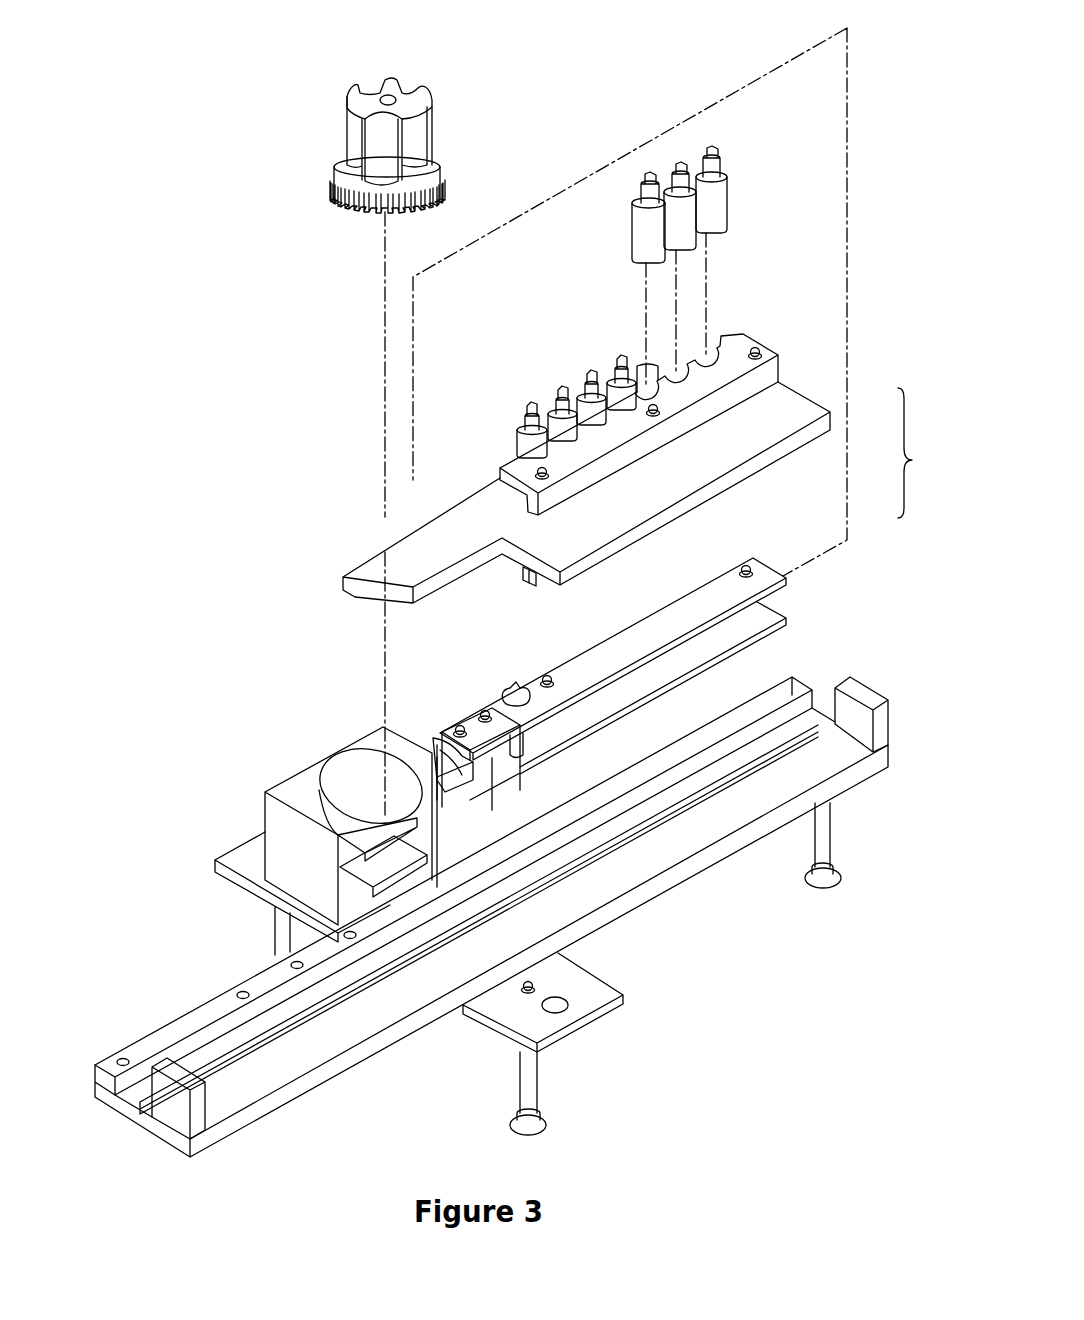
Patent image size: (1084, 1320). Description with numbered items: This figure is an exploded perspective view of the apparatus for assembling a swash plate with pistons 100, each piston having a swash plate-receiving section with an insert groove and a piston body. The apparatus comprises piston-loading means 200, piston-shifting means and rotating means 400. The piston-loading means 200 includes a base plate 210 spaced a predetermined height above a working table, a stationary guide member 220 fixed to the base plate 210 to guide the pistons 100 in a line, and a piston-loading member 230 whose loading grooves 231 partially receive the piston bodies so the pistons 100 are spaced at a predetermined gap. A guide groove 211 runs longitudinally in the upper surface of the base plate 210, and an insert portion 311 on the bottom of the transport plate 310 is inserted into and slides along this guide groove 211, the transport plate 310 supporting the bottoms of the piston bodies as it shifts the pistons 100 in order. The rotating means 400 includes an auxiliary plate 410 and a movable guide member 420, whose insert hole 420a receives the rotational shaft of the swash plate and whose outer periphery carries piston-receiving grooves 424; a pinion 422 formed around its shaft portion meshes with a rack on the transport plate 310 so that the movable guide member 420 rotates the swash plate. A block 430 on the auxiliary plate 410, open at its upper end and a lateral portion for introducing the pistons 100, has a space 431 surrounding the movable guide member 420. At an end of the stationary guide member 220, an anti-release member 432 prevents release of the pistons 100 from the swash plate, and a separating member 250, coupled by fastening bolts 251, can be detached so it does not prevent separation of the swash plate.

The piston 100 is at (788, 143).
The piston-loading means 200 is at (924, 453).
The base plate 210 is at (317, 1048).
The guide groove 211 is at (137, 1117).
The stationary guide member 220 is at (786, 575).
The piston-loading member 230 is at (765, 378).
The loading grooves 231 is at (718, 346).
The separating member 250 is at (473, 722).
The fastening bolts 251 is at (487, 712).
The transport plate 310 is at (744, 444).
The insert portion 311 is at (531, 578).
The rotating means 400 is at (180, 852).
The auxiliary plate 410 is at (247, 862).
The movable guide member 420 is at (353, 85).
The insert hole 420a is at (393, 88).
The pinion 422 is at (332, 187).
The piston-receiving grooves 424 is at (353, 117).
The block 430 is at (290, 790).
The space 431 is at (347, 787).
The anti-release member 432 is at (463, 772).